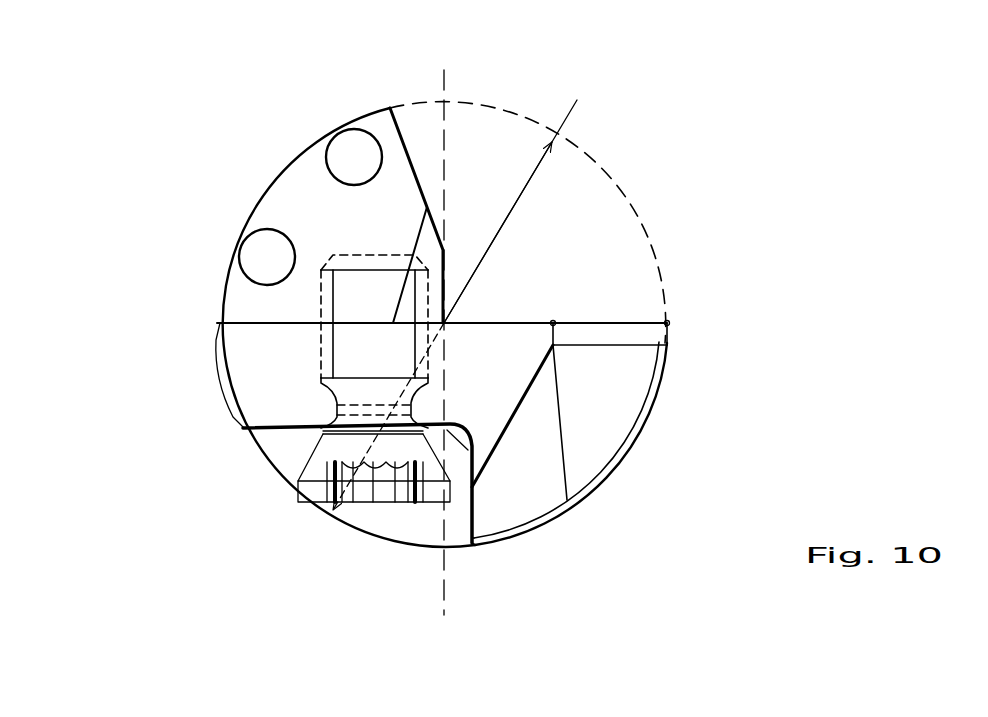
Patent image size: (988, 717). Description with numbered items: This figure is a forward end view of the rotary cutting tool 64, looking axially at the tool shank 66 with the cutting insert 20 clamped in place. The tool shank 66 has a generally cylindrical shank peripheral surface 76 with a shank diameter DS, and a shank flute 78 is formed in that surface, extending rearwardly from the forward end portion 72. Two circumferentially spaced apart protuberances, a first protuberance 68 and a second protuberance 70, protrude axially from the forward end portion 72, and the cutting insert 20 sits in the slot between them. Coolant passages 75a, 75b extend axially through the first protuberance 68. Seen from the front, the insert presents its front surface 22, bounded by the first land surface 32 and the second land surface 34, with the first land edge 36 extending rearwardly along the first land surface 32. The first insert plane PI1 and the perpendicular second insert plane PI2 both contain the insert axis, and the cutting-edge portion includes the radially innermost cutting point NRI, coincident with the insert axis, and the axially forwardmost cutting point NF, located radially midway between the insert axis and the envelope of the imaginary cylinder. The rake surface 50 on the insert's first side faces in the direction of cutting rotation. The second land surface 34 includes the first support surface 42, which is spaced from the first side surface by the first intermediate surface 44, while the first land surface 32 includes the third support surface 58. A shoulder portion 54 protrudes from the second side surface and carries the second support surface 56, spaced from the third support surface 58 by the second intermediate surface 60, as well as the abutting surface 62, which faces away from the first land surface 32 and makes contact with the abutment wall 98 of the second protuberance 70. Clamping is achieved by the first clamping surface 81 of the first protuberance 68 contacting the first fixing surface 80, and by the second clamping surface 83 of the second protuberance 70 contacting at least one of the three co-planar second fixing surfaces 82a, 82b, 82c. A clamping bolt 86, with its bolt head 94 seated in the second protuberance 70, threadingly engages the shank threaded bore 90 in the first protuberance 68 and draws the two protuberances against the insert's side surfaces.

The cutting insert 20 is at (580, 427).
The front surface 22 is at (503, 384).
The first land surface 32 is at (673, 333).
The second land surface 34 is at (210, 342).
The first land edge 36 is at (667, 323).
The first support surface 42 is at (220, 383).
The first intermediate surface 44 is at (217, 323).
The rake surface 50 is at (633, 320).
The shoulder portion 54 is at (517, 507).
The second support surface 56 is at (553, 523).
The third support surface 58 is at (667, 337).
The second intermediate surface 60 is at (640, 415).
The abutting surface 62 is at (472, 507).
The rotary cutting tool 64 is at (633, 160).
The tool shank 66 is at (397, 520).
The first protuberance 68 is at (280, 215).
The second protuberance 70 is at (285, 452).
The forward end portion 72 is at (390, 230).
The coolant passage 75a is at (356, 156).
The coolant passage 75b is at (265, 257).
The shank peripheral surface 76 is at (362, 535).
The shank flute 78 is at (447, 282).
The first fixing surface 80 is at (222, 292).
The first clamping surface 81 is at (270, 323).
The second fixing surface 82a is at (280, 433).
The second fixing surface 82b is at (374, 482).
The second fixing surface 82c is at (415, 482).
The second clamping surface 83 is at (247, 421).
The clamping bolt 86 is at (357, 287).
The shank threaded bore 90 is at (250, 321).
The bolt head 94 is at (315, 470).
The abutment wall 98 is at (472, 507).
The first insert plane PI1 is at (217, 323).
The second insert plane PI2 is at (446, 340).
The shank diameter DS is at (470, 293).
The axially forwardmost cutting point NF is at (557, 322).
The radially innermost cutting point NRI is at (444, 321).